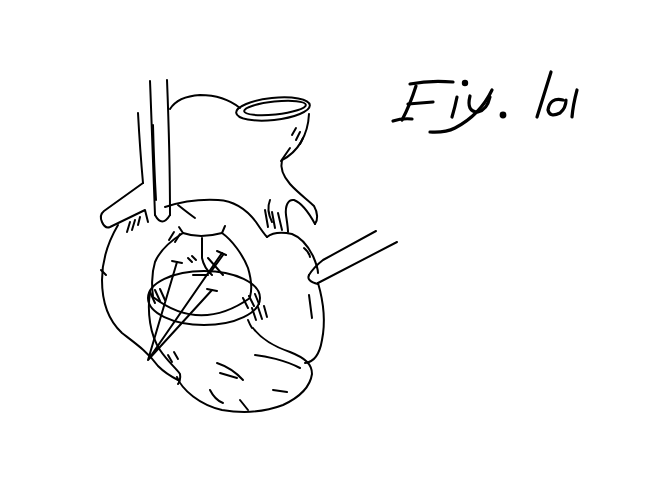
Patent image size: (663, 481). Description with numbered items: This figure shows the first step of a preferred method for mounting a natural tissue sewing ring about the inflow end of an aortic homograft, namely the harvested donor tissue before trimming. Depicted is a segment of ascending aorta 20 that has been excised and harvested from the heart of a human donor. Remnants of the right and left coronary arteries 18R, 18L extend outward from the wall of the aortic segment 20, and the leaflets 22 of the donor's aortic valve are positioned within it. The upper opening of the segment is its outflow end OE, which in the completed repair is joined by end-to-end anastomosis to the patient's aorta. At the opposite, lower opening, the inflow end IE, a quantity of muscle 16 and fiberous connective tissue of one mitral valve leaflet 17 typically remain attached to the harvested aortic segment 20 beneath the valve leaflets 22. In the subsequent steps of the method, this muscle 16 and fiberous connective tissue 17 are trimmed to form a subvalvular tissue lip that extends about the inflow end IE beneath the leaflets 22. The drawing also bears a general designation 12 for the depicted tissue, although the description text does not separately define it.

The implant device 12 is at (323, 172).
The segment of ascending aorta 20 is at (218, 138).
The outflow end OE is at (312, 101).
The right coronary artery remnant 18R is at (118, 202).
The left coronary artery remnant 18L is at (318, 199).
The muscle 16 is at (123, 307).
The fiberous connective tissue of mitral valve leaflet 17 is at (270, 372).
The inflow end IE is at (326, 381).
The leaflets 22 is at (148, 360).